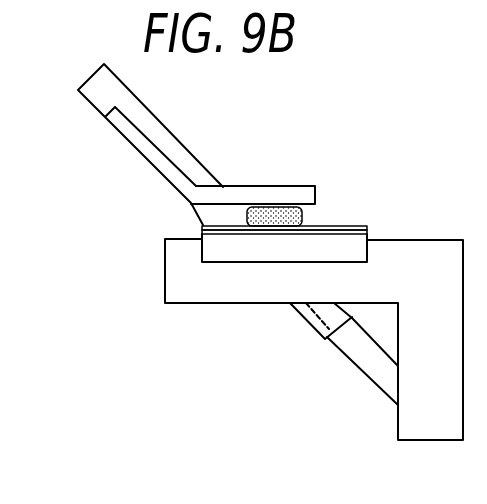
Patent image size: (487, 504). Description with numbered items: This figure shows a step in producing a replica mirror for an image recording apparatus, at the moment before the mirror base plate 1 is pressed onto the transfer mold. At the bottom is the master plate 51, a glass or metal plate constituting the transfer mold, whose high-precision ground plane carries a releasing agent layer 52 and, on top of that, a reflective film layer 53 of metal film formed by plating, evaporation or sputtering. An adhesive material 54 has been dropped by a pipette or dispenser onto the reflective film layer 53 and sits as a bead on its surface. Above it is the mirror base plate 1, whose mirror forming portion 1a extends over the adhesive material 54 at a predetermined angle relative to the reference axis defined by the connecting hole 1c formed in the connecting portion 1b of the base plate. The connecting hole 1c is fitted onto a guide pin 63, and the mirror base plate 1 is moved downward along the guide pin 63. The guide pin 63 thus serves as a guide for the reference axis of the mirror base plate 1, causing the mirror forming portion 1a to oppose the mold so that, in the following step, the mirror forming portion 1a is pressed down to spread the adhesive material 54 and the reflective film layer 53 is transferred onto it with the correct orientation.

The mirror base plate 1 is at (230, 167).
The mirror forming portion 1a is at (303, 193).
The connecting portion 1b is at (293, 312).
The connecting hole 1c is at (312, 330).
The master plate 51 is at (208, 252).
The releasing agent layer 52 is at (201, 231).
The reflective film layer 53 is at (202, 225).
The adhesive material 54 is at (303, 217).
The guide pin 63 is at (370, 372).